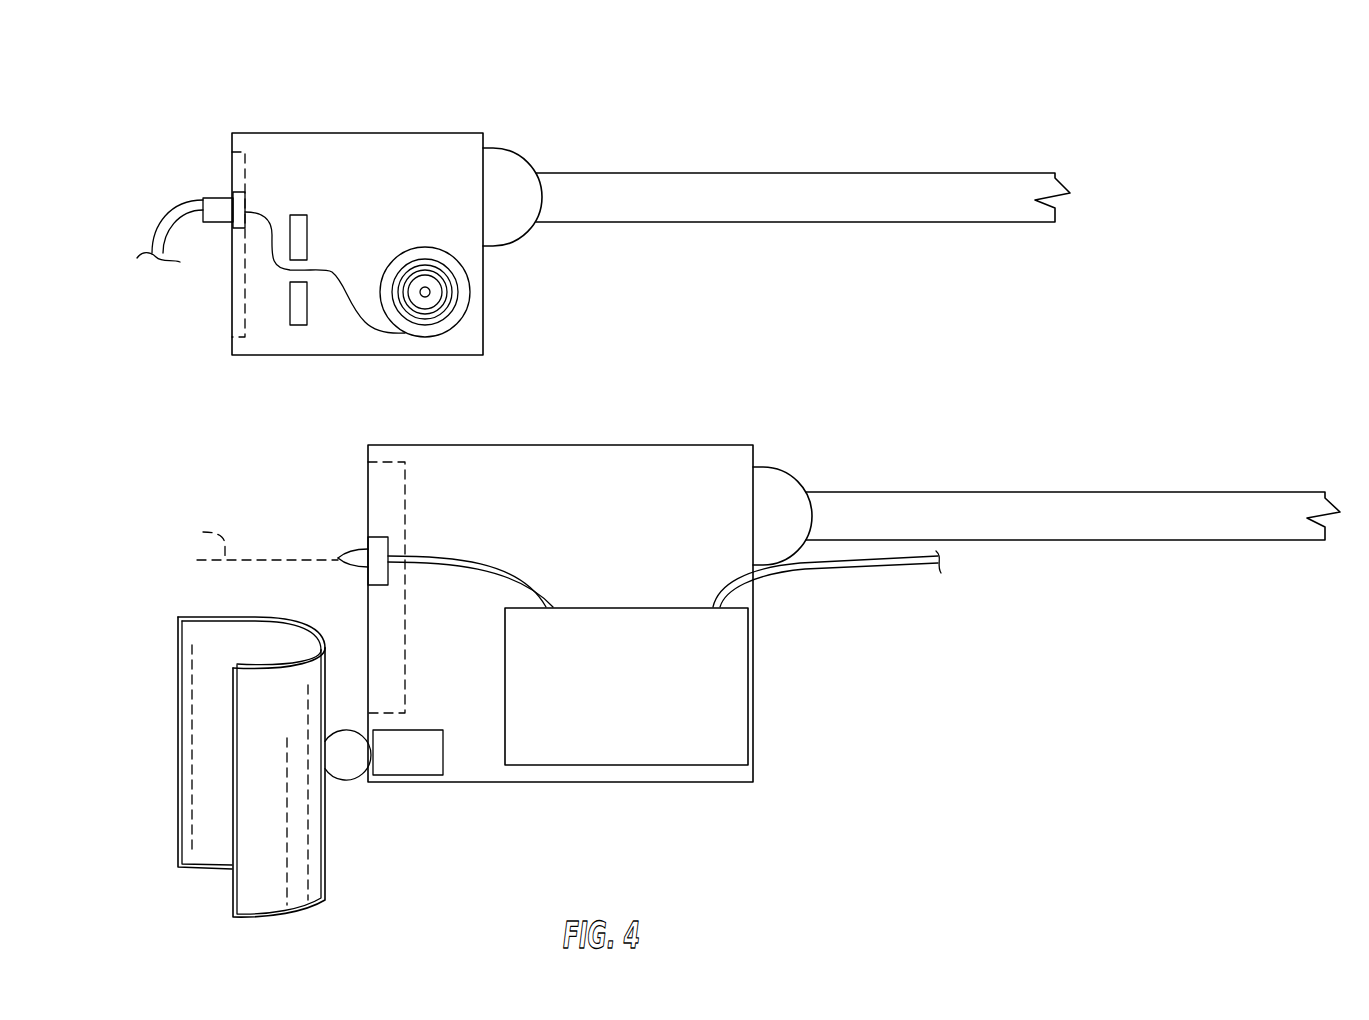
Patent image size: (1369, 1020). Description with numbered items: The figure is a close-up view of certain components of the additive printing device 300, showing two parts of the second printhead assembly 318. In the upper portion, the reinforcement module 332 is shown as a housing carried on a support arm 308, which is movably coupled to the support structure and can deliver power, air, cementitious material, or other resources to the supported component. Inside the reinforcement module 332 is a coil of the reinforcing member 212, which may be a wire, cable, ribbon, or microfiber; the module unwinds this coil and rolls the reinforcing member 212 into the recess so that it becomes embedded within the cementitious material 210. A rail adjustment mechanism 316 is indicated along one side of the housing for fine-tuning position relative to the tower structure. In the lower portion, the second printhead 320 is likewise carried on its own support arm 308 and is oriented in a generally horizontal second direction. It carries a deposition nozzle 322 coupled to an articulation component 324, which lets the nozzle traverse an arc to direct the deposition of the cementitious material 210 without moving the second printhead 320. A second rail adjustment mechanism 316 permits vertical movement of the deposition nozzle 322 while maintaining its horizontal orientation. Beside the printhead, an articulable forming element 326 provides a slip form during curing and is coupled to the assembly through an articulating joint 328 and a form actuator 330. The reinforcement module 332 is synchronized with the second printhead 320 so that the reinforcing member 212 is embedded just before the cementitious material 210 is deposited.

The additive printing device 300 is at (1254, 176).
The second printhead assembly 318 is at (352, 200).
The second printhead 320 is at (555, 650).
The reinforcement module 332 is at (420, 148).
The support arm 308 is at (850, 185).
The reinforcing member 212 is at (470, 256).
The rail adjustment mechanism 316 is at (254, 310).
The articulation component 324 is at (363, 543).
The deposition nozzle 322 is at (351, 568).
The articulable forming element 326 is at (270, 900).
The articulating joint 328 is at (345, 778).
The form actuator 330 is at (412, 763).
The cementitious material 210 is at (703, 747).